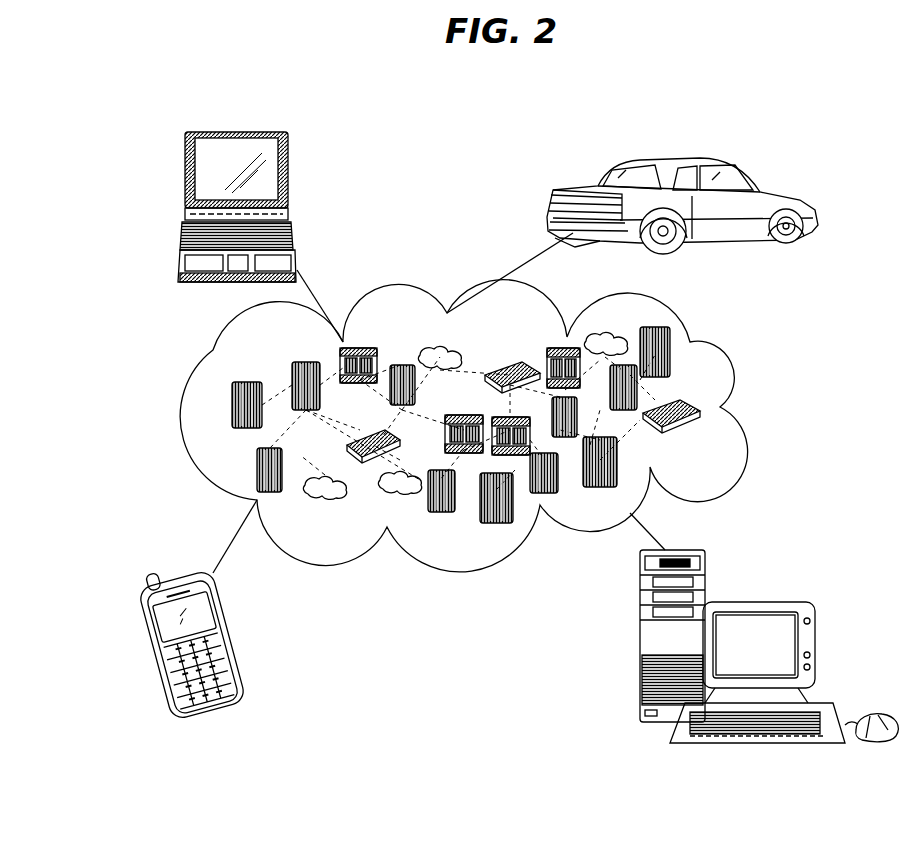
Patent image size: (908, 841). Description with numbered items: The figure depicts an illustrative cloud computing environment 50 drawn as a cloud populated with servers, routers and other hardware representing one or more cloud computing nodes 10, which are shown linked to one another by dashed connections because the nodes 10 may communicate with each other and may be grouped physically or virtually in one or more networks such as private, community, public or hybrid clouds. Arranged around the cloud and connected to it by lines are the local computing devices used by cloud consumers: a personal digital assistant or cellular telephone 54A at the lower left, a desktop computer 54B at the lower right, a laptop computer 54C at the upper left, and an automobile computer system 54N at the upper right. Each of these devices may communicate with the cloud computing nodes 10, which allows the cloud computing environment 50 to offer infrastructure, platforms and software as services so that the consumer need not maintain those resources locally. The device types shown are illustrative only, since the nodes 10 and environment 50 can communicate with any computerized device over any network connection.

The cloud computing environment 50 is at (733, 358).
The cloud computing node 10 is at (713, 448).
The personal digital assistant or cellular telephone 54A is at (142, 641).
The desktop computer 54B is at (768, 602).
The laptop computer 54C is at (209, 132).
The automobile computer system 54N is at (732, 176).